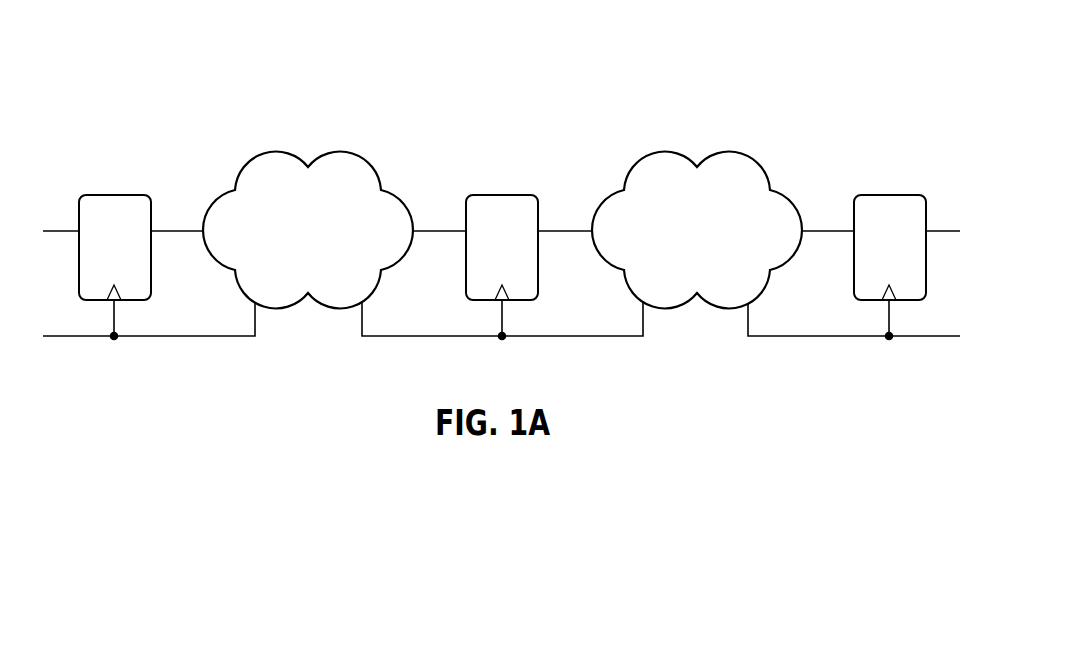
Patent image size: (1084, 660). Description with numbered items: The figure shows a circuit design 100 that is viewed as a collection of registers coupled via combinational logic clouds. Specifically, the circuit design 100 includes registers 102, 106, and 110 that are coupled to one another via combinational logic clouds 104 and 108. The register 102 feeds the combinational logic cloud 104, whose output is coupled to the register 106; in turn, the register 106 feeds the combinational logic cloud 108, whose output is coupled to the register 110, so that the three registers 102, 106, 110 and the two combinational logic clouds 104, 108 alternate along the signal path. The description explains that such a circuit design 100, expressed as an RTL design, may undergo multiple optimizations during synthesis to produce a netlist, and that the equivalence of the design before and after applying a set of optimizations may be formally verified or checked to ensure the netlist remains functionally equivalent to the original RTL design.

The circuit design 100 is at (158, 94).
The register 102 is at (114, 262).
The combinational logic cloud 104 is at (308, 230).
The register 106 is at (502, 262).
The combinational logic cloud 108 is at (697, 230).
The register 110 is at (890, 262).